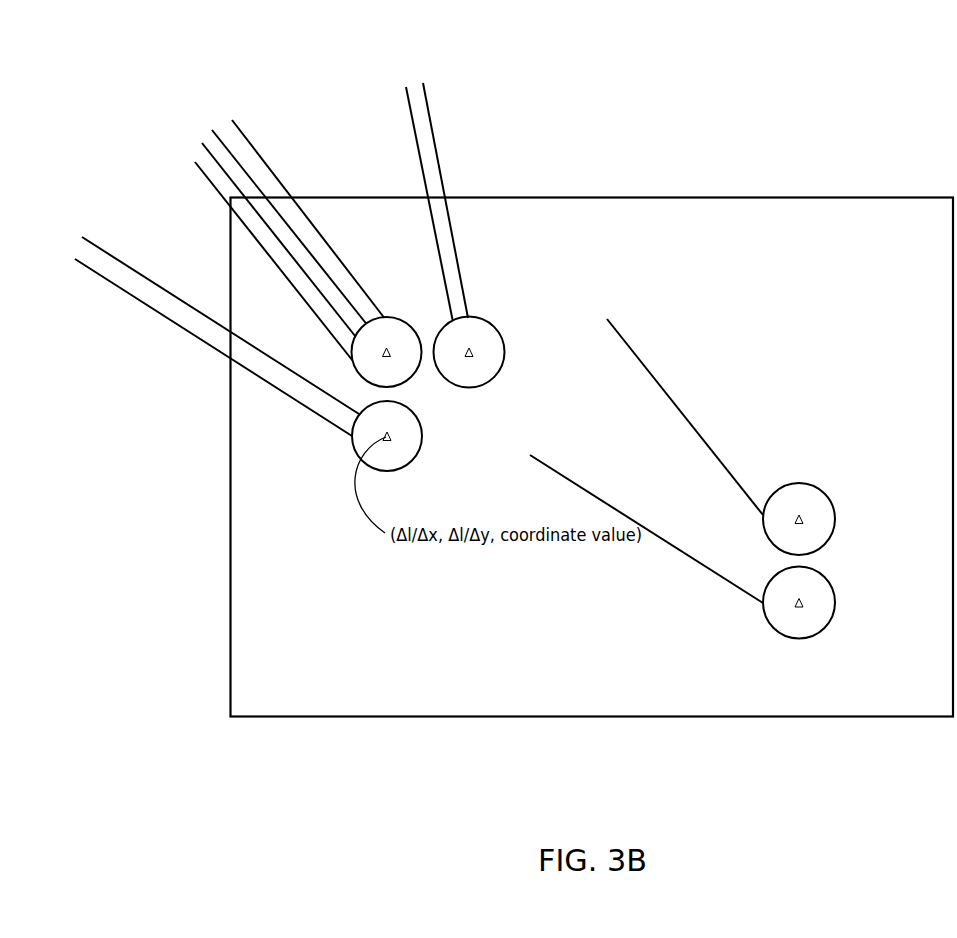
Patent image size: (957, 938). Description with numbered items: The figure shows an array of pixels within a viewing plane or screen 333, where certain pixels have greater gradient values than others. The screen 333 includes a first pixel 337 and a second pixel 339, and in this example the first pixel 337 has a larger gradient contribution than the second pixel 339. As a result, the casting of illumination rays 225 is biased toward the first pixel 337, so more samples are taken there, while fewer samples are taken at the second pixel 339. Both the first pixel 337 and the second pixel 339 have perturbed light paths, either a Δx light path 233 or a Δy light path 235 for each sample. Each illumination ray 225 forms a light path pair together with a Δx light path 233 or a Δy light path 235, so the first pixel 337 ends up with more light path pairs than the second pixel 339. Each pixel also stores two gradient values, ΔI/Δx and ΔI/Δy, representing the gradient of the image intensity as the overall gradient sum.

The illumination rays 225 is at (202, 143).
The Δy light path 235 is at (120, 290).
The Δx light path 233 is at (425, 100).
The first pixel 337 is at (418, 370).
The second pixel 339 is at (802, 640).
The viewing plane or screen 333 is at (615, 705).